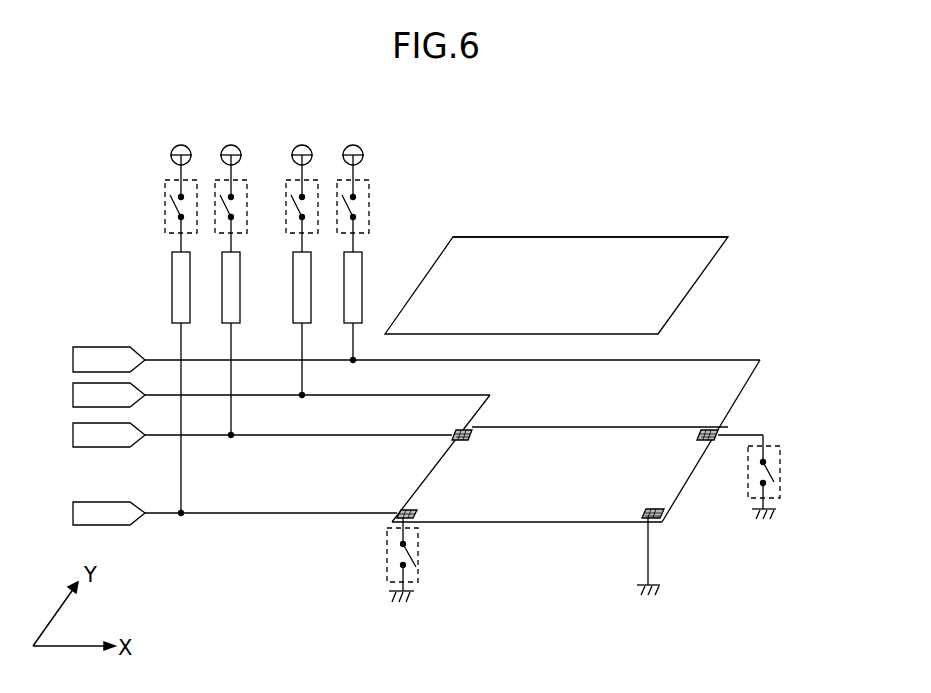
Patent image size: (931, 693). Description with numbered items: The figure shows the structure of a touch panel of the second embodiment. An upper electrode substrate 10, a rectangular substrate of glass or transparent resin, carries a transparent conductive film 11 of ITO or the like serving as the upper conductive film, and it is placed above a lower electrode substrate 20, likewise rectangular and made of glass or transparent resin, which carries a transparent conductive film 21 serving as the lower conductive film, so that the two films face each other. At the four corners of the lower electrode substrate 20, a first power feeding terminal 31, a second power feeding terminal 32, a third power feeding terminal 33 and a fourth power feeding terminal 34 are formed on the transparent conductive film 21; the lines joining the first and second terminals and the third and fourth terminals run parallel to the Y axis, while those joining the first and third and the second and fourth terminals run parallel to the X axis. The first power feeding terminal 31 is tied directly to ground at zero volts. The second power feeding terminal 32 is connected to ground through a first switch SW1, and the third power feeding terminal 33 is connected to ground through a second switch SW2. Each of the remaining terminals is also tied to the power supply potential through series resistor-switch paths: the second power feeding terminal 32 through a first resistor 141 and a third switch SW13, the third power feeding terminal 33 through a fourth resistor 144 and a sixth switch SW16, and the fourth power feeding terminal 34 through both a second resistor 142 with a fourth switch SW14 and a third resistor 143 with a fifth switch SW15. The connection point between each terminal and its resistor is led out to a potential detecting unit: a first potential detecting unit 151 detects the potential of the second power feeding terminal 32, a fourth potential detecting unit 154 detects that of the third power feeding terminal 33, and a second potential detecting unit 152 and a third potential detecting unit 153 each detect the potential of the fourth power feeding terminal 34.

The upper electrode substrate 10 is at (588, 237).
The transparent conductive film 11 is at (641, 252).
The lower electrode substrate 20 is at (513, 523).
The transparent conductive film 21 is at (566, 500).
The first power feeding terminal 31 is at (663, 522).
The second power feeding terminal 32 is at (706, 441).
The third power feeding terminal 33 is at (400, 510).
The fourth power feeding terminal 34 is at (453, 431).
The first resistor 141 is at (362, 256).
The second resistor 142 is at (293, 290).
The third resistor 143 is at (240, 295).
The fourth resistor 144 is at (172, 289).
The first potential detecting unit 151 is at (76, 347).
The second potential detecting unit 152 is at (76, 383).
The third potential detecting unit 153 is at (76, 423).
The fourth potential detecting unit 154 is at (76, 502).
The first switch SW1 is at (781, 467).
The second switch SW2 is at (386, 555).
The third switch SW13 is at (369, 197).
The fourth switch SW14 is at (286, 197).
The fifth switch SW15 is at (215, 197).
The sixth switch SW16 is at (165, 206).